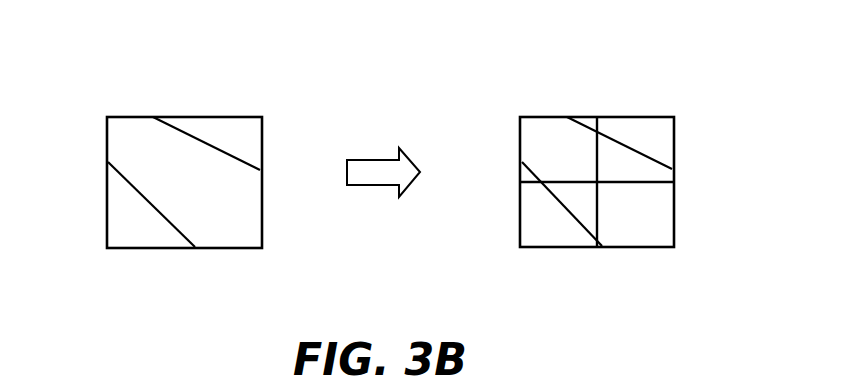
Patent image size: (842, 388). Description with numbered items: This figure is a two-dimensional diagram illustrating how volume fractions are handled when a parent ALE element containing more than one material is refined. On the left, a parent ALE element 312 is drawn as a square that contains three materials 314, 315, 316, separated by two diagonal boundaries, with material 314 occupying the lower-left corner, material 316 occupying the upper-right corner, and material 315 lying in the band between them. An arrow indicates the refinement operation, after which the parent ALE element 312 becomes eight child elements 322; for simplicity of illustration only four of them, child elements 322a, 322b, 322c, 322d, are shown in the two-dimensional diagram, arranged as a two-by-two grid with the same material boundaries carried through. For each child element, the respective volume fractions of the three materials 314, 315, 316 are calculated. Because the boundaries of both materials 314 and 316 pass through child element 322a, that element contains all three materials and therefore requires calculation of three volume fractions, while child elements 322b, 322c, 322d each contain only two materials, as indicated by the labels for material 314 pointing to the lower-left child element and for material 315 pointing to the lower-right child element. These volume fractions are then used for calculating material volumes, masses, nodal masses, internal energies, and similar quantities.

The parent ALE element 312 is at (113, 116).
The material 314 is at (532, 203).
The material 315 is at (697, 213).
The material 316 is at (673, 83).
The child elements 322 is at (530, 116).
The child element 322a is at (569, 168).
The child element 322b is at (623, 168).
The child element 322c is at (548, 228).
The child element 322d is at (640, 228).